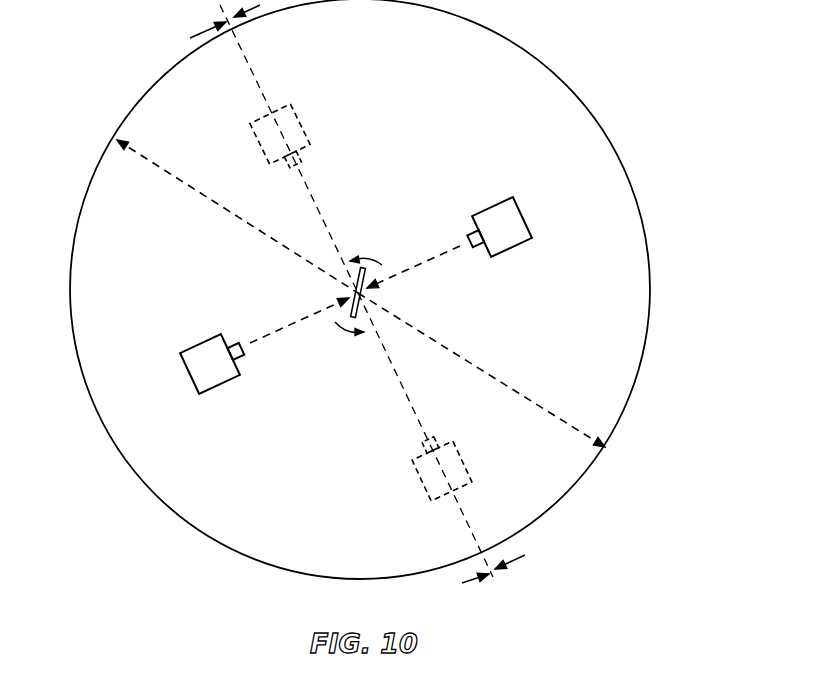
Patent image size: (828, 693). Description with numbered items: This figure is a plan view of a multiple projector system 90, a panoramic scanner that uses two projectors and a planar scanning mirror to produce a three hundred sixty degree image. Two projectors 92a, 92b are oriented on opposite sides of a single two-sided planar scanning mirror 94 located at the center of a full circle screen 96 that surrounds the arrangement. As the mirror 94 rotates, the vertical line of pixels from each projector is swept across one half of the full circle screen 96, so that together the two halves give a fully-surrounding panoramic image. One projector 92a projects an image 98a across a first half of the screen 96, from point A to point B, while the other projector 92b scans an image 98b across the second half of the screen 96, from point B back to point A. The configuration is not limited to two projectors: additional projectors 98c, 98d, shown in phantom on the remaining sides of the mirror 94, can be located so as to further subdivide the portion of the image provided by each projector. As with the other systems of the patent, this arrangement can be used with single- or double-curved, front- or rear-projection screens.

The multiple projector system 90 is at (110, 95).
The projector 92a is at (202, 382).
The projector 92b is at (517, 220).
The two-sided planar scanning mirror 94 is at (362, 270).
The full circle screen 96 is at (652, 273).
The image 98a is at (203, 194).
The image 98b is at (498, 380).
The additional projector 98c is at (305, 120).
The additional projector 98d is at (412, 462).